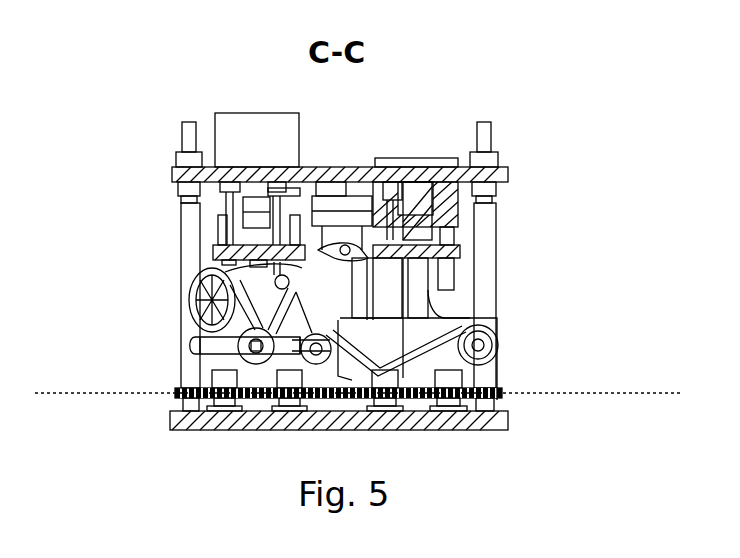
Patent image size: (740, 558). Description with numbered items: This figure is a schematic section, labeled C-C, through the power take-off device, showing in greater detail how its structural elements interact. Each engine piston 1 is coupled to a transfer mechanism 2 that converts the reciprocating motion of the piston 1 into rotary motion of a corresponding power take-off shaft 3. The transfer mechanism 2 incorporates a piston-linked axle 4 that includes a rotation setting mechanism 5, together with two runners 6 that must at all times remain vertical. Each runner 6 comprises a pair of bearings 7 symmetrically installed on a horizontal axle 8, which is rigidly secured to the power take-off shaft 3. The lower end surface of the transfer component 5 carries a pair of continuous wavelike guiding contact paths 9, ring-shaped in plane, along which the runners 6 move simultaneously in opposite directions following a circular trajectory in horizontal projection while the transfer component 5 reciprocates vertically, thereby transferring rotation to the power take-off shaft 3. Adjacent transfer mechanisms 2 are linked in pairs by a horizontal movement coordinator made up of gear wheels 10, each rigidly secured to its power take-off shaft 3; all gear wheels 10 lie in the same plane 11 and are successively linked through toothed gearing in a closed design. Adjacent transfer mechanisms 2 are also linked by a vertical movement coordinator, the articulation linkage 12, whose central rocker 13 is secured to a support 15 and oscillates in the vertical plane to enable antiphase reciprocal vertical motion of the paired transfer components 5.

The engine piston 1 is at (238, 133).
The transfer mechanism 2 is at (205, 236).
The power take-off shaft 3 is at (270, 430).
The piston-linked axle 4 is at (238, 207).
The rotation setting mechanism 5 is at (280, 272).
The runner 6 is at (300, 322).
The bearing 7 is at (292, 352).
The horizontal axle 8 is at (250, 360).
The guiding contact path 9 is at (207, 295).
The gear wheel 10 is at (228, 402).
The plane 11 is at (617, 391).
The articulation linkage 12 is at (368, 215).
The central rocker 13 is at (305, 262).
The support 15 is at (364, 226).